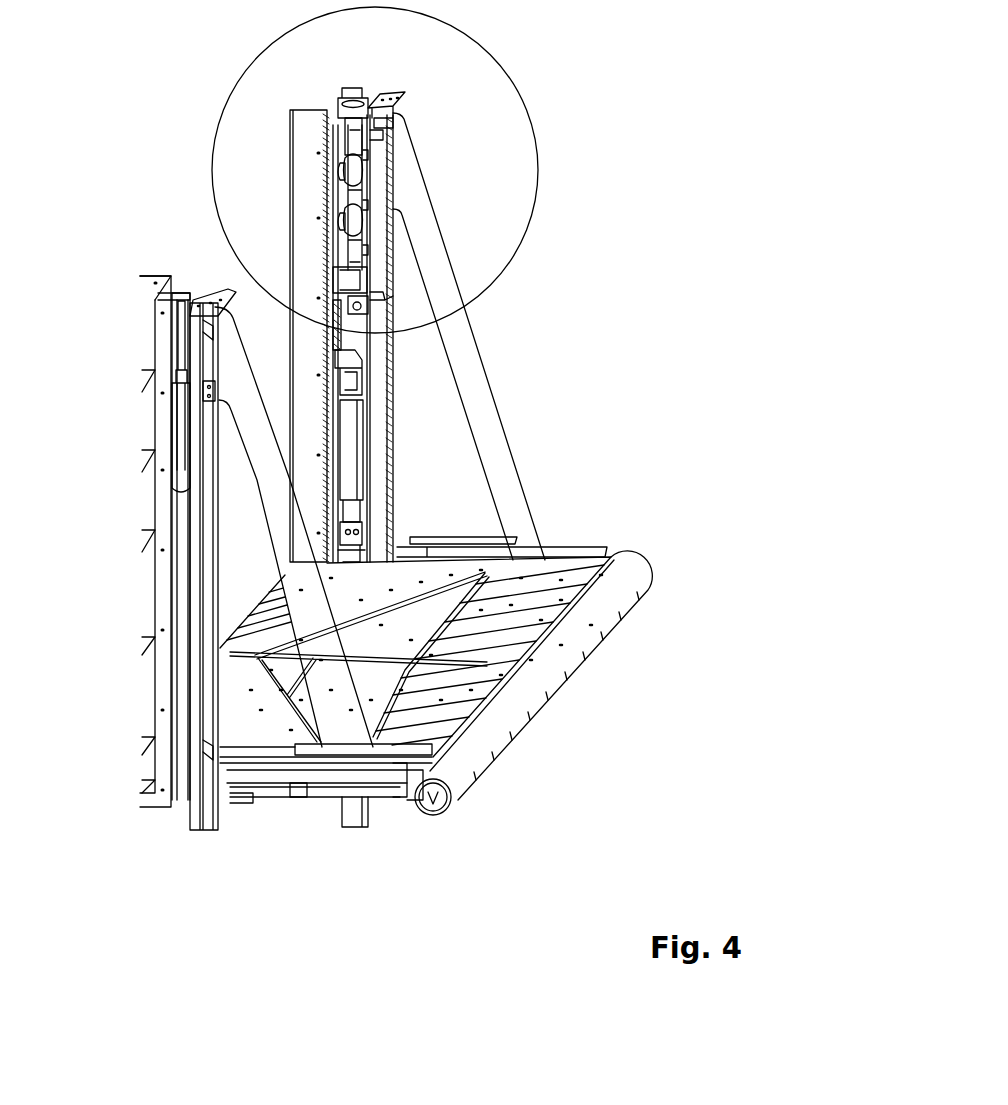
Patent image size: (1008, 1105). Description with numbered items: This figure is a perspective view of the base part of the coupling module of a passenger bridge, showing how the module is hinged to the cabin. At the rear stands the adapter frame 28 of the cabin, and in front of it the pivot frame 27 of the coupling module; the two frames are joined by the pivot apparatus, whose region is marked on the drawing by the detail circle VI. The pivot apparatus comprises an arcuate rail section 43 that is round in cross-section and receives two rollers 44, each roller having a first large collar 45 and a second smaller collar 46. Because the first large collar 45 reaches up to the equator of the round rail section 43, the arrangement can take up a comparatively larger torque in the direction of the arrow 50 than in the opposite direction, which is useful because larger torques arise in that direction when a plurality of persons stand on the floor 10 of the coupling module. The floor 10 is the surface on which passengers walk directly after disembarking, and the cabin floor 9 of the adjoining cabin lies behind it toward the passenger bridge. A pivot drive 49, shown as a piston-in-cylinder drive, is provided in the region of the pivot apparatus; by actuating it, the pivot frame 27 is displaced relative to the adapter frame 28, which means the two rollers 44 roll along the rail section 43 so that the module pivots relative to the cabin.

The cabin floor 9 is at (256, 605).
The floor 10 is at (522, 602).
The pivot frame 27 is at (208, 697).
The adapter frame 28 is at (162, 683).
The rail section 43 is at (360, 148).
The rollers 44 is at (357, 175).
The first large collar 45 is at (347, 220).
The second smaller collar 46 is at (367, 238).
The pivot drive 49 is at (367, 453).
The arrow 50 is at (520, 677).
The detail circle VI is at (530, 108).